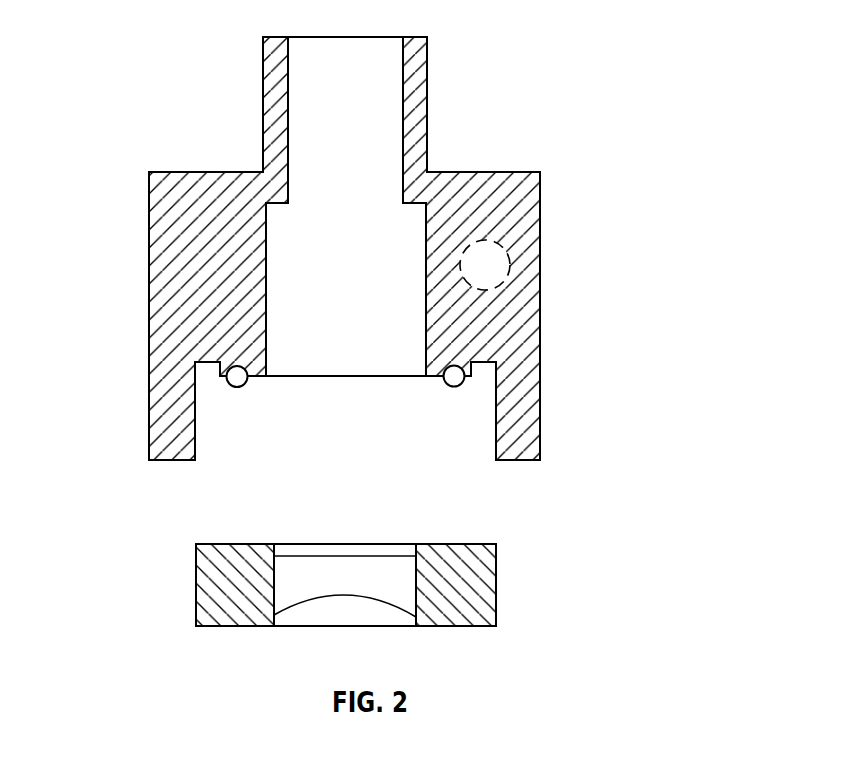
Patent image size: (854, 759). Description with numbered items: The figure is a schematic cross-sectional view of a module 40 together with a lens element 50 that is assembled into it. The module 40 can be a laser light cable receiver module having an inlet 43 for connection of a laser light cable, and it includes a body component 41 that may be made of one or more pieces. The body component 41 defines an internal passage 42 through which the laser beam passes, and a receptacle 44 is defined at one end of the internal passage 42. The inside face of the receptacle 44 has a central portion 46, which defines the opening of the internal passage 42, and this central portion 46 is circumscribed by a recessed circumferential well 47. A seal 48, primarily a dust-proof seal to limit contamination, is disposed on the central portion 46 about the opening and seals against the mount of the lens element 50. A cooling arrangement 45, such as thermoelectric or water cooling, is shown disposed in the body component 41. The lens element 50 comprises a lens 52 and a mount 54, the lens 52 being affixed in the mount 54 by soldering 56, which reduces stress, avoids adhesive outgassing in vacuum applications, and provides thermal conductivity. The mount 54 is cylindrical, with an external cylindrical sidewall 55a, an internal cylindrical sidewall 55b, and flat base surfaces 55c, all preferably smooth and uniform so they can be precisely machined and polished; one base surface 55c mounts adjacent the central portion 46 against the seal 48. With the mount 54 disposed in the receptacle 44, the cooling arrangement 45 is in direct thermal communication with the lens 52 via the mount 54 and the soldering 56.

The module 40 is at (315, 242).
The body component 41 is at (148, 244).
The internal passage 42 is at (267, 277).
The inlet 43 is at (418, 37).
The receptacle 44 is at (495, 443).
The cooling arrangement 45 is at (519, 261).
The central portion 46 is at (345, 377).
The recessed well 47 is at (207, 364).
The seal 48 is at (453, 387).
The lens element 50 is at (262, 570).
The lens 52 is at (347, 556).
The mount 54 is at (208, 583).
The external cylindrical sidewall 55a is at (195, 605).
The internal cylindrical sidewall 55b is at (398, 628).
The flat base surface 55c is at (247, 542).
The soldering 56 is at (320, 627).